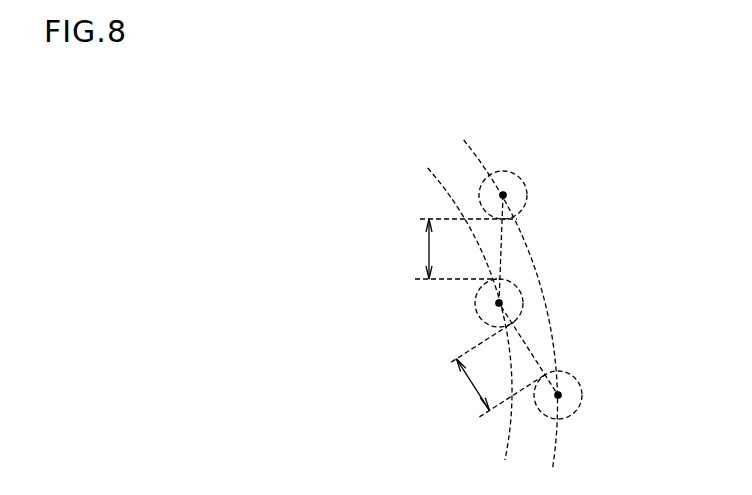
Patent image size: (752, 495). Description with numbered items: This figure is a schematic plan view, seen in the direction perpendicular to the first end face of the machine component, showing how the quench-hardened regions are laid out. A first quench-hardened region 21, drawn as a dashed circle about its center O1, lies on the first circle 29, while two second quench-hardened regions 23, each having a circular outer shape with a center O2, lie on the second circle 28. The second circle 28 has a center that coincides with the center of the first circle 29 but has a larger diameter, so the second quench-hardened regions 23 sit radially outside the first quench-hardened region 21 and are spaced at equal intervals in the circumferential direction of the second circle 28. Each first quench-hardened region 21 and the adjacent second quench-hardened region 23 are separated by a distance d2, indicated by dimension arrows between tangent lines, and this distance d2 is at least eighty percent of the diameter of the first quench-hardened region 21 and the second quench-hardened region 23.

The second circle 28 is at (469, 146).
The first circle 29 is at (441, 181).
The second quench-hardened region 23 is at (524, 185).
The center of second quench-hardened region O2 is at (507, 197).
The first quench-hardened region 21 is at (477, 299).
The center of first roller O1 is at (497, 305).
The distance d2 is at (472, 318).